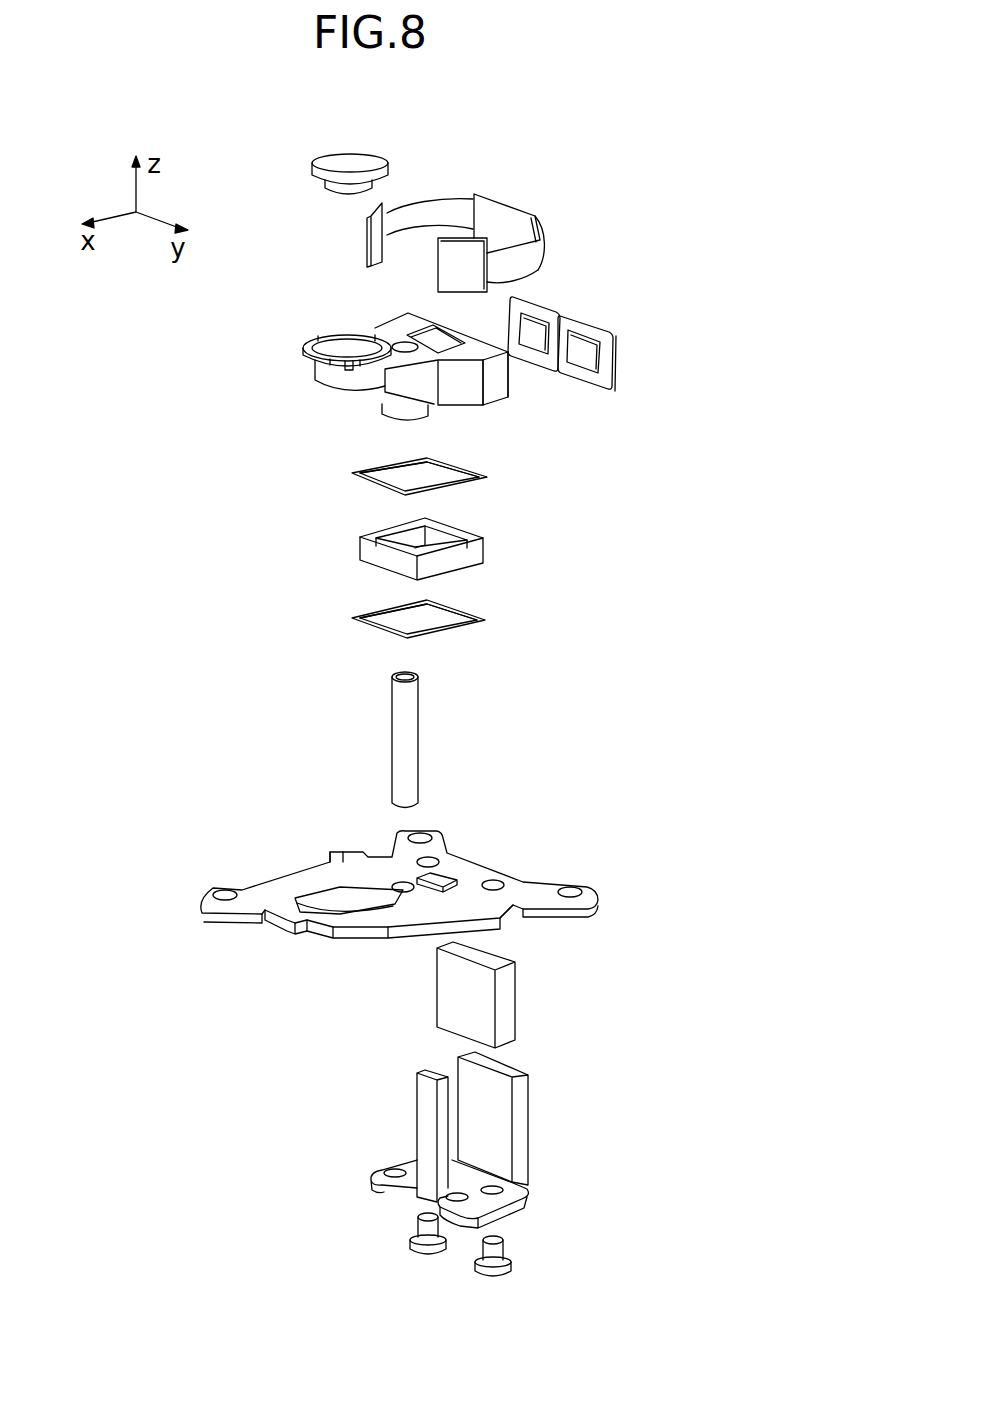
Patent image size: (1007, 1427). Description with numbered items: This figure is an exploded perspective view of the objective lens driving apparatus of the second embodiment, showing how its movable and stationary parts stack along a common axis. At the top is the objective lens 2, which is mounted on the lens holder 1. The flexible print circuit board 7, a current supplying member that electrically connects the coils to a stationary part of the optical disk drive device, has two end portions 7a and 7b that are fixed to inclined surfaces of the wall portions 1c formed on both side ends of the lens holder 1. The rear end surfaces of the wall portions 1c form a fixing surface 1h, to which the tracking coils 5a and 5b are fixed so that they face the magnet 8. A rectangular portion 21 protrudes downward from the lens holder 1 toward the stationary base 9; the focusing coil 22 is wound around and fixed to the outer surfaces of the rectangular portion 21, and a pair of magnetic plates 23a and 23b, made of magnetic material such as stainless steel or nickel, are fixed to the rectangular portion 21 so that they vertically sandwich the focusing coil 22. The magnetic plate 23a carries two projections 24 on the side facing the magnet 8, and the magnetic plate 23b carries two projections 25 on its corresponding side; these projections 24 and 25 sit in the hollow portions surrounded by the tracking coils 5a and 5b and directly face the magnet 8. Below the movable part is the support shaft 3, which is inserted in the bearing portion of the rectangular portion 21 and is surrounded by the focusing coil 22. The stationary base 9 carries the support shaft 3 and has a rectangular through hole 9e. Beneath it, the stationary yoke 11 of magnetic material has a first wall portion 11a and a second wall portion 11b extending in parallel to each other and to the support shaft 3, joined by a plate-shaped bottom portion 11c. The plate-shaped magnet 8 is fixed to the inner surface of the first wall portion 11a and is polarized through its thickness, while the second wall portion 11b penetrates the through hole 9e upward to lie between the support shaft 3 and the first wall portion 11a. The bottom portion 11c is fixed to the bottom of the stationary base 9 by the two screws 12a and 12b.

The lens holder 1 is at (432, 377).
The wall portions 1c is at (500, 387).
The end surface (fixing surface) 1h is at (512, 377).
The objective lens 2 is at (338, 168).
The support shaft 3 is at (398, 730).
The tracking coil 5a is at (560, 298).
The tracking coil 5b is at (612, 360).
The flexible print circuit board 7 is at (508, 215).
The end portion of flexible print circuit board 7a is at (367, 248).
The end portion of flexible print circuit board 7b is at (457, 258).
The magnet 8 is at (507, 997).
The stationary base 9 is at (399, 907).
The rectangular through hole 9e is at (450, 877).
The stationary yoke 11 is at (461, 1147).
The first wall portion 11a is at (467, 1102).
The second wall portion 11b is at (425, 1138).
The bottom portion 11c is at (513, 1203).
The screw 12a is at (410, 1250).
The screw 12b is at (517, 1268).
The rectangular portion 21 is at (388, 392).
The focusing coil 22 is at (485, 540).
The magnetic plate 23a is at (368, 487).
The magnetic plate 23b is at (367, 628).
The projections 24 is at (482, 474).
The projections 25 is at (480, 618).